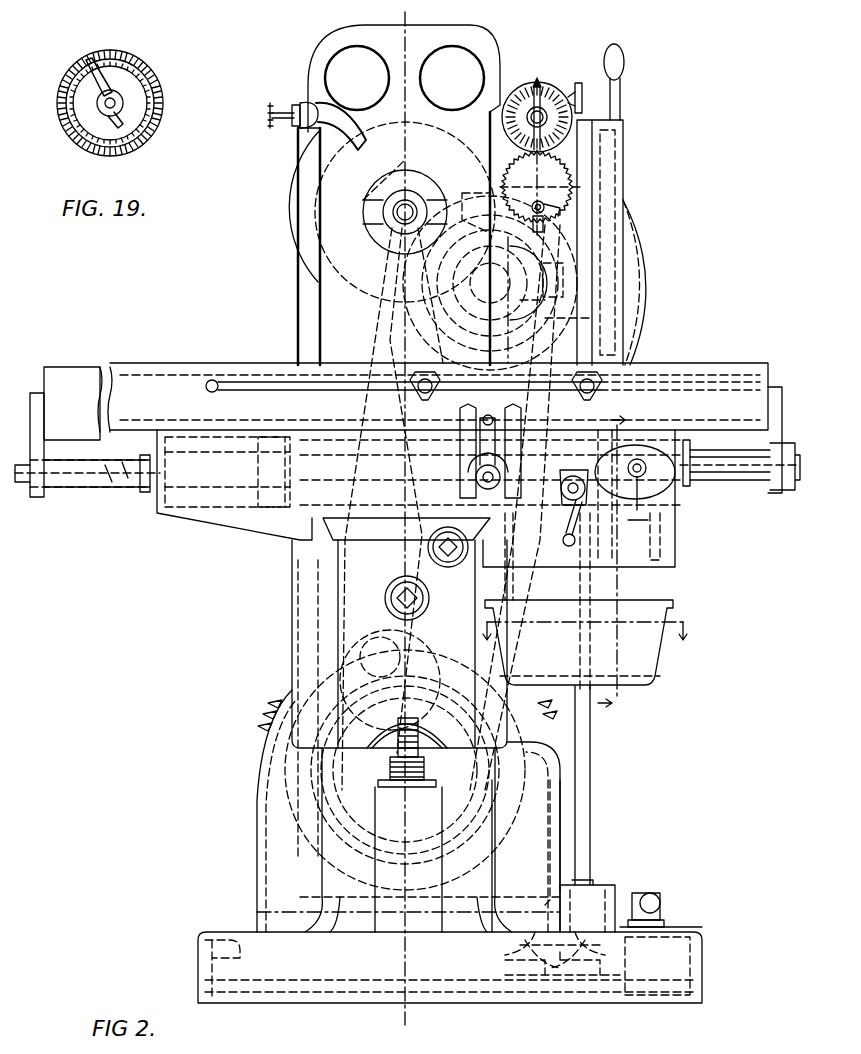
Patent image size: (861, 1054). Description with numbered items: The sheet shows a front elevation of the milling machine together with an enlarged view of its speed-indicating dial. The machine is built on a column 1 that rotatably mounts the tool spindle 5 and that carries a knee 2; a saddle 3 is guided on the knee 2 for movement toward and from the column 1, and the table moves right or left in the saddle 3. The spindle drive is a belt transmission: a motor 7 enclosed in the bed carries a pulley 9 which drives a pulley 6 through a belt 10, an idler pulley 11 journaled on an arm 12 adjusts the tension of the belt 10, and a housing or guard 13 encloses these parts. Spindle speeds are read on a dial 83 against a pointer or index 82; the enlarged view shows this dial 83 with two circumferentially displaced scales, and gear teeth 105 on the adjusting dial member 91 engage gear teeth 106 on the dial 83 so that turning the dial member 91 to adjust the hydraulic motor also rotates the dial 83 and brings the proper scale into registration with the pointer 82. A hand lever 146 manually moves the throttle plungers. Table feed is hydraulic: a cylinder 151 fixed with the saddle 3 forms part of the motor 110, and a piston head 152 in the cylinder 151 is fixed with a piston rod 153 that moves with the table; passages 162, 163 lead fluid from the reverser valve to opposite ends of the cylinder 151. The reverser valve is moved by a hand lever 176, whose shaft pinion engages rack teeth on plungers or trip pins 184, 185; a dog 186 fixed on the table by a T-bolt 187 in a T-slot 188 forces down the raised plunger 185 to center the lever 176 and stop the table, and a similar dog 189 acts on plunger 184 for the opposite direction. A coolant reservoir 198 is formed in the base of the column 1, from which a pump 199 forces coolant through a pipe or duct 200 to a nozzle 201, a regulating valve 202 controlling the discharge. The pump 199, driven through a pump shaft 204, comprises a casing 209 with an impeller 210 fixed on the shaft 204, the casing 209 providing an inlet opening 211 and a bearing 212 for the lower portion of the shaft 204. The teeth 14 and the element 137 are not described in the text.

In FIG. 2, the column 1 is at (335, 312).
In FIG. 2, the knee 2 is at (345, 578).
In FIG. 2, the saddle 3 is at (250, 552).
In FIG. 2, the tool spindle 5 is at (372, 200).
In FIG. 2, the pulley 6 is at (606, 556).
In FIG. 2, the motor 7 is at (512, 856).
In FIG. 2, the pulley 9 is at (447, 793).
In FIG. 2, the belt 10 is at (447, 793).
In FIG. 2, the idler pulley 11 is at (360, 633).
In FIG. 2, the arm 12 is at (430, 702).
In FIG. 2, the housing or guard 13 is at (508, 666).
In FIG. 2, the teeth 14 is at (265, 708).
In FIG. 19, the pointer or index 82 is at (80, 80).
In FIG. 19, the dial 83 is at (158, 76).
In FIG. 2, the dial 83 is at (548, 90).
In FIG. 2, the dial member 91 is at (562, 204).
In FIG. 2, the gear teeth 105 is at (496, 182).
In FIG. 2, the gear teeth 106 is at (505, 118).
In FIG. 2, the motor 110 is at (205, 513).
In FIG. 2, the bearing 137 is at (665, 493).
In FIG. 2, the hand lever 146 is at (576, 541).
In FIG. 2, the cylinder 151 is at (190, 495).
In FIG. 2, the piston head 152 is at (265, 492).
In FIG. 2, the piston rod 153 is at (92, 478).
In FIG. 2, the passage 162 is at (210, 460).
In FIG. 2, the passage 163 is at (660, 450).
In FIG. 2, the hand lever 176 is at (470, 447).
In FIG. 2, the plunger or trip pin 184 is at (462, 410).
In FIG. 2, the plunger or trip pin 185 is at (510, 416).
In FIG. 2, the dog 186 is at (614, 410).
In FIG. 2, the T-bolt 187 is at (600, 378).
In FIG. 2, the T-slot 188 is at (693, 385).
In FIG. 2, the dog 189 is at (410, 394).
In FIG. 2, the reservoir 198 is at (380, 975).
In FIG. 2, the pump 199 is at (540, 960).
In FIG. 2, the pipe or duct 200 is at (304, 278).
In FIG. 2, the nozzle 201 is at (352, 130).
In FIG. 2, the regulating valve 202 is at (290, 106).
In FIG. 2, the pump shaft 204 is at (592, 752).
In FIG. 2, the casing 209 is at (535, 946).
In FIG. 2, the impeller 210 is at (530, 956).
In FIG. 2, the inlet opening 211 is at (585, 975).
In FIG. 2, the bearing 212 is at (593, 882).